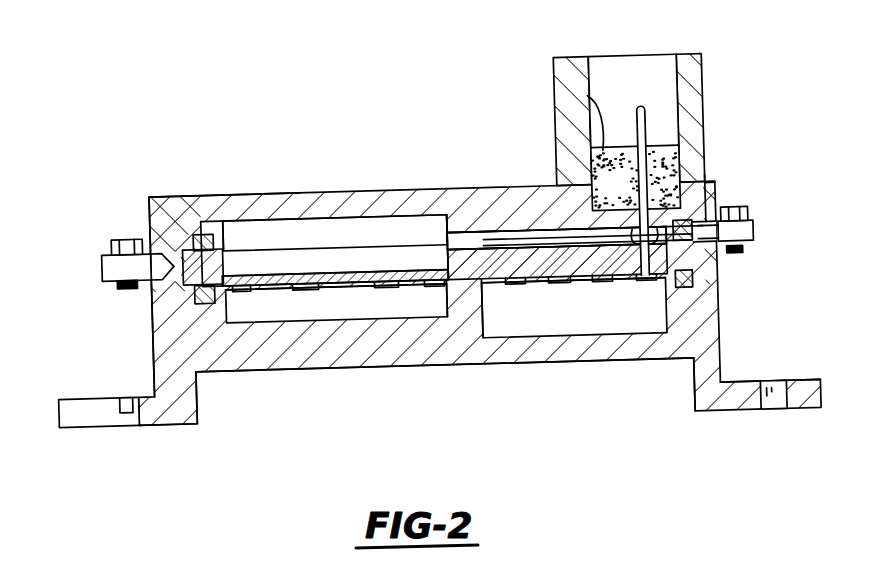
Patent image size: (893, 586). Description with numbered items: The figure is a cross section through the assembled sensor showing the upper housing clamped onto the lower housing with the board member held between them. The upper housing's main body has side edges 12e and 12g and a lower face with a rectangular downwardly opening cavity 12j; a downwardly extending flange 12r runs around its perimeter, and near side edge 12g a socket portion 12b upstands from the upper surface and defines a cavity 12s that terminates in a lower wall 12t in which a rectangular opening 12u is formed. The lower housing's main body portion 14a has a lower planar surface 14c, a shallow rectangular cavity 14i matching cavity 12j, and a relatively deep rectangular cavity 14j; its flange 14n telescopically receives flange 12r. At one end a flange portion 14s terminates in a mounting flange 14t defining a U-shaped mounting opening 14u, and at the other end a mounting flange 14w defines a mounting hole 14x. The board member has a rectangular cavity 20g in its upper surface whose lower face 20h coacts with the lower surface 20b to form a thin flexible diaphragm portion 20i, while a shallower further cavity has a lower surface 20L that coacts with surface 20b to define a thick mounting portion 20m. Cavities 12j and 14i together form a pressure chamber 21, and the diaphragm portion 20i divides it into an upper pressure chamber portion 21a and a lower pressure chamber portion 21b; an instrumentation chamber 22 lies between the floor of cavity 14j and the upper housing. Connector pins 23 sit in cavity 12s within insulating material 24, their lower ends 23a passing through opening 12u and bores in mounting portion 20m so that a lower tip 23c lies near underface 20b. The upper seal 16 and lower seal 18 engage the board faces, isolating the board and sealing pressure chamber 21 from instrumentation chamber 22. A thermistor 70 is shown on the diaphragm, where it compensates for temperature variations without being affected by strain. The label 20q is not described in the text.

The side edge 12e is at (150, 209).
The downwardly extending flange 12r is at (150, 343).
The rectangular downwardly opening cavity 12j is at (432, 221).
The cavity 12s is at (673, 72).
The socket portion 12b is at (706, 122).
The lower wall 12t is at (610, 207).
The rectangular opening 12u is at (708, 161).
The side edge 12g is at (722, 192).
The flange 14n is at (150, 289).
The U-shaped mounting opening 14u is at (126, 405).
The mounting flange 14t is at (150, 428).
The flange portion 14s is at (192, 428).
The relatively shallow rectangular cavity 14i is at (303, 318).
The lower generally planar surface 14c is at (455, 370).
The main body portion 14a is at (543, 378).
The relatively deep rectangular cavity 14j is at (652, 330).
The mounting flange 14w is at (745, 382).
The mounting hole 14x is at (773, 408).
The upper seal 16 is at (200, 226).
The lower seal 18 is at (205, 320).
The generally rectangular cavity 20g is at (226, 230).
The flexible diaphragm portion 20i is at (290, 266).
The lower face of cavity 20h is at (338, 253).
The lower surface 20b is at (338, 285).
The lower surface of cavity 20L is at (510, 228).
The plate right portion 20q is at (540, 222).
The mounting portion 20m is at (608, 261).
The pressure chamber 21 is at (347, 310).
The upper pressure chamber portion 21a is at (390, 214).
The lower pressure chamber portion 21b is at (427, 318).
The instrumentation chamber 22 is at (582, 310).
The connector pins 23 is at (636, 110).
The lower ends 23a is at (712, 284).
The lower tip 23c is at (712, 295).
The insulating material 24 is at (588, 96).
The thermistor 70 is at (286, 292).